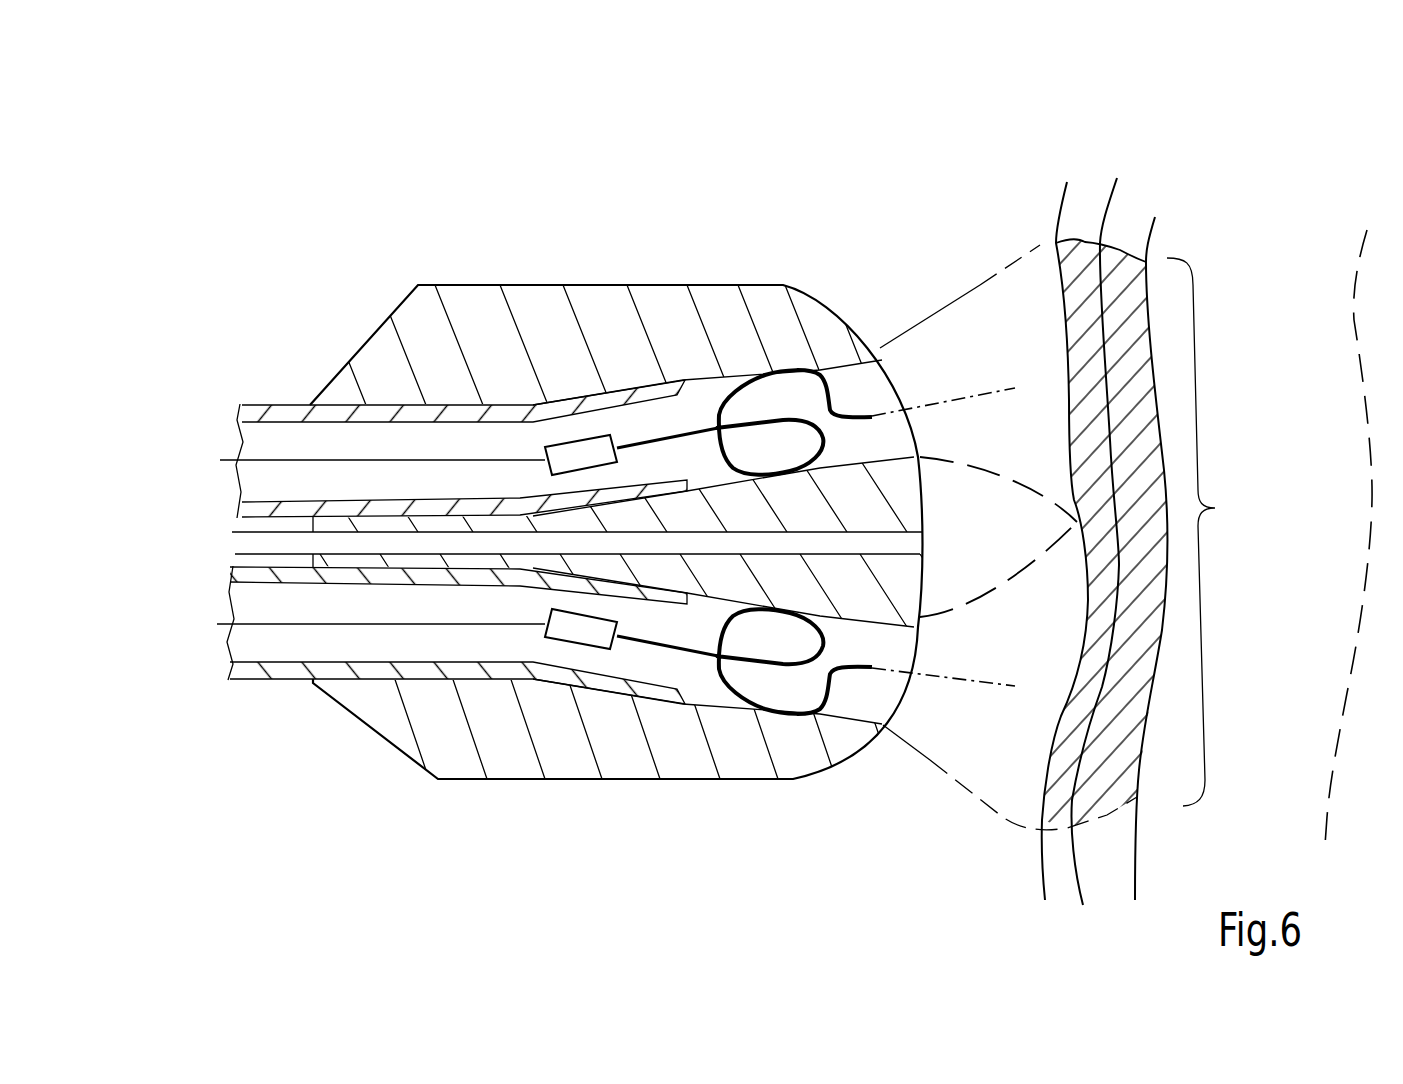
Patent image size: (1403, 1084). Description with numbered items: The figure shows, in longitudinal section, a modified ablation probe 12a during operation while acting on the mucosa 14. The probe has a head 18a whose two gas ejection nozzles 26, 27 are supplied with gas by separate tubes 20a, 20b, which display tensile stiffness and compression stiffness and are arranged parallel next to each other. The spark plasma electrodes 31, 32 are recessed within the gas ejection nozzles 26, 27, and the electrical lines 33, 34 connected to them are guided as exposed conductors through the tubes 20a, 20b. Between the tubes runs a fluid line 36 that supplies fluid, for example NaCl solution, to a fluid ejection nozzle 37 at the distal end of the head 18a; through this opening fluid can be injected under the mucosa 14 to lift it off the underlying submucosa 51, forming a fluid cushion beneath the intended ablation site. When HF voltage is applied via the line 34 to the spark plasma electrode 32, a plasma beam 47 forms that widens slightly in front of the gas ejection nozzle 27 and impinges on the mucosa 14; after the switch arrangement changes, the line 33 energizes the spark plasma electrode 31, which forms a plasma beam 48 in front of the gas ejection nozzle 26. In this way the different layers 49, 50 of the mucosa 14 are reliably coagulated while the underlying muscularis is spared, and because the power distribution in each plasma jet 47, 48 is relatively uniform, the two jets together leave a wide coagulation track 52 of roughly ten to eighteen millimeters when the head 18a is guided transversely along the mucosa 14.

The ablation probe 12a is at (601, 482).
The mucosa 14 is at (1128, 472).
The head 18a is at (613, 253).
The tube 20a is at (265, 677).
The tube 20b is at (266, 405).
The gas ejection nozzle 26 is at (878, 697).
The gas ejection nozzle 27 is at (898, 437).
The spark plasma electrode 31 is at (856, 665).
The spark plasma electrode 32 is at (849, 412).
The electrical line 33 is at (250, 626).
The electrical line 34 is at (255, 460).
The fluid line 36 is at (258, 542).
The fluid ejection nozzle 37 is at (905, 543).
The plasma beam 47 is at (982, 264).
The plasma beam 48 is at (970, 756).
The layer of the mucosa 49 is at (1100, 168).
The layer of the mucosa 50 is at (1080, 88).
The submucosa 51 is at (1219, 215).
The coagulation track 52 is at (1206, 532).